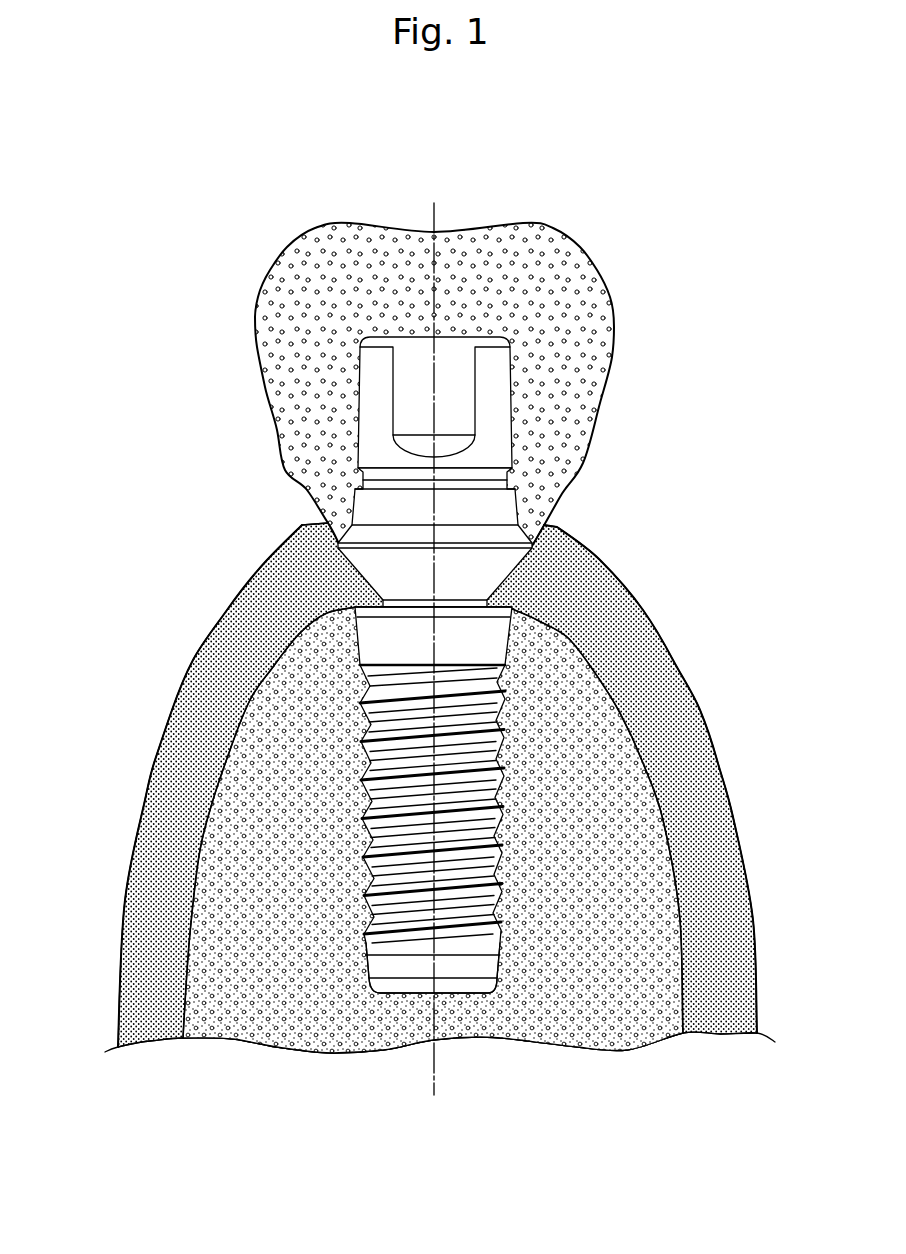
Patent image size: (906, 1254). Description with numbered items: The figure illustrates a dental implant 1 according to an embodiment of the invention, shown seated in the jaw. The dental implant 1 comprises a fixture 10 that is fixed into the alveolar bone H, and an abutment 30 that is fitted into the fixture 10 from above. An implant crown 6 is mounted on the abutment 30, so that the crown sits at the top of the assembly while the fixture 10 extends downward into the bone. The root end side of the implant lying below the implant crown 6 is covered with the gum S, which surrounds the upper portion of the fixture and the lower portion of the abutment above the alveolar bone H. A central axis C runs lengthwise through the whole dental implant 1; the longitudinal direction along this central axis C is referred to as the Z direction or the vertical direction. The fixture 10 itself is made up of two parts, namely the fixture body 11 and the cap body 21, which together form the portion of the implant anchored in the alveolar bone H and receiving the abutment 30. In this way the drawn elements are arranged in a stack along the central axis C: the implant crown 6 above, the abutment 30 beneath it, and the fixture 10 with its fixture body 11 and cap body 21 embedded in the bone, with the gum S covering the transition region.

The dental implant 1 is at (381, 608).
The implant crown 6 is at (590, 330).
The abutment 30 is at (380, 432).
The fixture 10 is at (273, 800).
The fixture body 11 is at (387, 638).
The cap body 21 is at (383, 968).
The central axis C is at (437, 215).
The gum S is at (673, 703).
The alveolar bone H is at (627, 792).